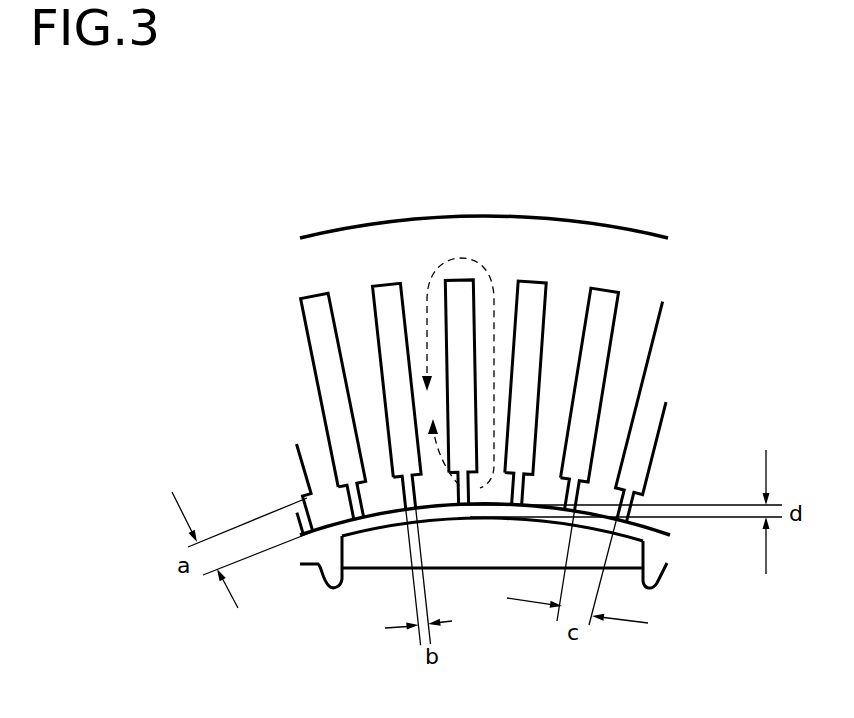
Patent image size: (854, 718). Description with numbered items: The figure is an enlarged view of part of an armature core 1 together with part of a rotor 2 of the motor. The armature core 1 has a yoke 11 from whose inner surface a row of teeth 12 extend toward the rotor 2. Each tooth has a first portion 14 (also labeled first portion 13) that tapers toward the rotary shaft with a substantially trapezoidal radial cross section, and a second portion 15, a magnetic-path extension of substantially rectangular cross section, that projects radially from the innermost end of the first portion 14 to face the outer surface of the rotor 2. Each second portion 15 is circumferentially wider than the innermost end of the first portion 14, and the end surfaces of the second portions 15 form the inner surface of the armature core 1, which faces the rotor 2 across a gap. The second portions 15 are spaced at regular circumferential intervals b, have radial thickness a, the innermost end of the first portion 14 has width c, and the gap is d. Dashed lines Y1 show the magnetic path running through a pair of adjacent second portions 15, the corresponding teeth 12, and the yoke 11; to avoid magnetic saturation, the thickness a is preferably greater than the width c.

The armature core 1 is at (325, 233).
The rotor 2 is at (643, 547).
The yoke 11 is at (425, 243).
The teeth 12 is at (362, 350).
The first portion 13 is at (595, 328).
The first portion 14 is at (368, 397).
The second portion 15 is at (383, 500).
The dashed lines Y1 is at (490, 255).